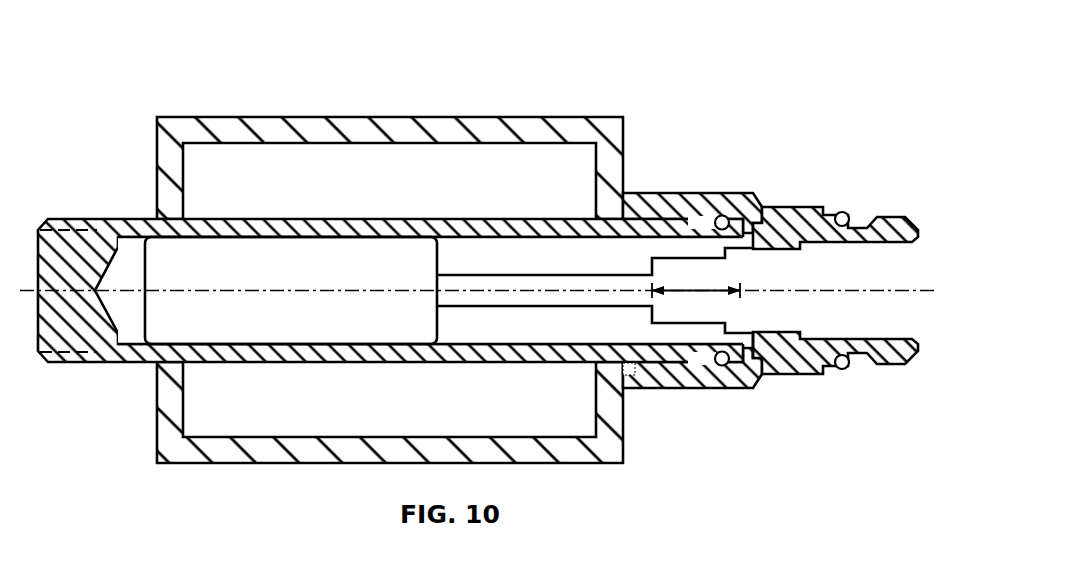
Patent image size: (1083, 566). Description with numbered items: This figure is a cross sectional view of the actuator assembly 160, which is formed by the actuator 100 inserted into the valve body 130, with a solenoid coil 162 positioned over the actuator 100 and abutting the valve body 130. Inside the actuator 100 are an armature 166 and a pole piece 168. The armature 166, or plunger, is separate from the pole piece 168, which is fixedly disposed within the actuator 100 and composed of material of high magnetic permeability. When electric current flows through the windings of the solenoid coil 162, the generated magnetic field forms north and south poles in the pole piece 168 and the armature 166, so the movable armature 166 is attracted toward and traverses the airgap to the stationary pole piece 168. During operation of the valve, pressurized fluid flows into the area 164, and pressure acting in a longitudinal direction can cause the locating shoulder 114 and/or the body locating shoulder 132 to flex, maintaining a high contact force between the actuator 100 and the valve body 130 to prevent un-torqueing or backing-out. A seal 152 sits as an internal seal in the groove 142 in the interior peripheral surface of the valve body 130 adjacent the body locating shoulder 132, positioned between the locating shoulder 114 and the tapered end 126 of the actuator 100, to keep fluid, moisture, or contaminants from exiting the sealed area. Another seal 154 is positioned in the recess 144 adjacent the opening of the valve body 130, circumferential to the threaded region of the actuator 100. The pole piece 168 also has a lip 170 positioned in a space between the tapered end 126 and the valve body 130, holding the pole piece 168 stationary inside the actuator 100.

The actuator assembly 160 is at (264, 21).
The solenoid coil 162 is at (305, 115).
The actuator 100 is at (525, 218).
The armature 166 is at (264, 324).
The pole piece 168 is at (611, 250).
The valve body 130 is at (725, 192).
The lip 170 is at (754, 215).
The area 164 is at (789, 273).
The tapered end 126 is at (753, 350).
The groove 142 is at (753, 331).
The seal 152 is at (732, 375).
The locating shoulder 114 is at (700, 420).
The body locating shoulder 132 is at (708, 377).
The recess 144 is at (669, 410).
The seal 154 is at (637, 379).